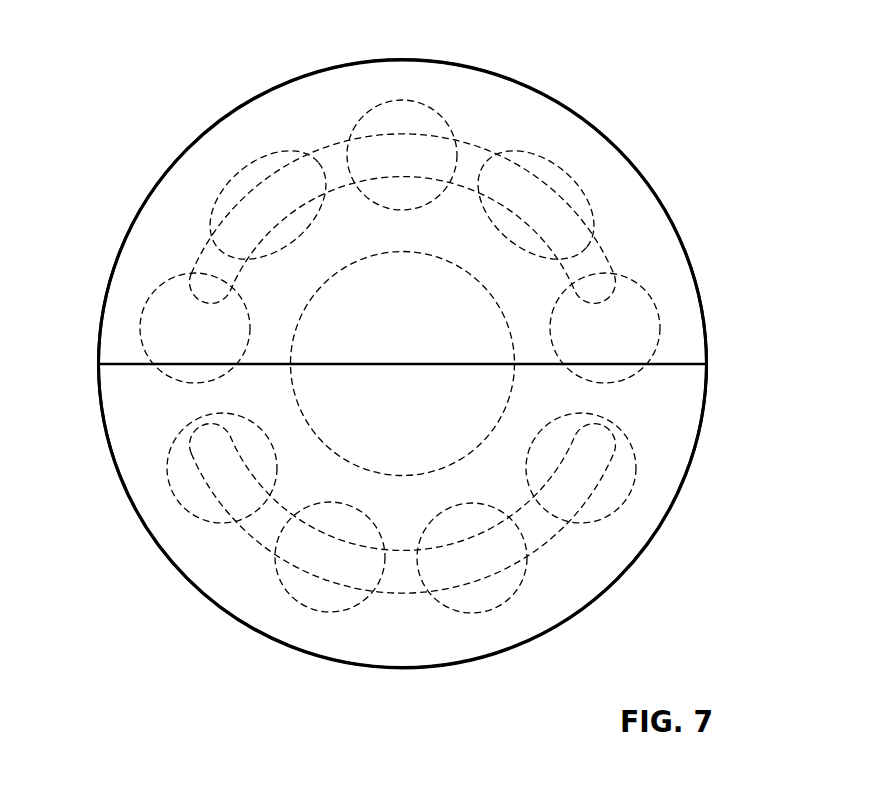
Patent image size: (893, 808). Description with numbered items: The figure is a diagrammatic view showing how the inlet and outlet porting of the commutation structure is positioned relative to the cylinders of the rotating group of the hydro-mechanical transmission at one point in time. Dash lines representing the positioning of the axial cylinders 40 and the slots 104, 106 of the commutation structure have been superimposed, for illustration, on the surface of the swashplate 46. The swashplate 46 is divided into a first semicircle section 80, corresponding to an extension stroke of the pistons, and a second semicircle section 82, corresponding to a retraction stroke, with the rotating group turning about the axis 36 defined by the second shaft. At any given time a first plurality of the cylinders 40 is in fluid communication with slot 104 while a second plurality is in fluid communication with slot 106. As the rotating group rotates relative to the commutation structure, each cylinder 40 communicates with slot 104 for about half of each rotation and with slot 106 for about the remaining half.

The axis 36 is at (402, 362).
The axial cylinders 40 is at (142, 322).
The swashplate 46 is at (648, 170).
The first semicircle section 80 is at (303, 89).
The second semicircle section 82 is at (417, 657).
The slot 104 is at (203, 240).
The slot 106 is at (548, 533).